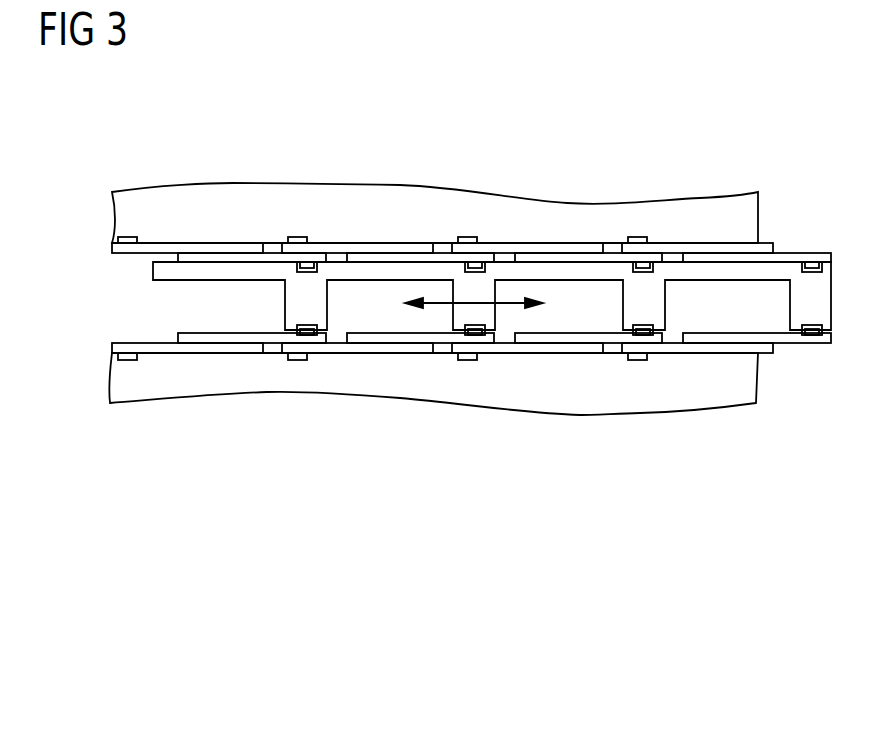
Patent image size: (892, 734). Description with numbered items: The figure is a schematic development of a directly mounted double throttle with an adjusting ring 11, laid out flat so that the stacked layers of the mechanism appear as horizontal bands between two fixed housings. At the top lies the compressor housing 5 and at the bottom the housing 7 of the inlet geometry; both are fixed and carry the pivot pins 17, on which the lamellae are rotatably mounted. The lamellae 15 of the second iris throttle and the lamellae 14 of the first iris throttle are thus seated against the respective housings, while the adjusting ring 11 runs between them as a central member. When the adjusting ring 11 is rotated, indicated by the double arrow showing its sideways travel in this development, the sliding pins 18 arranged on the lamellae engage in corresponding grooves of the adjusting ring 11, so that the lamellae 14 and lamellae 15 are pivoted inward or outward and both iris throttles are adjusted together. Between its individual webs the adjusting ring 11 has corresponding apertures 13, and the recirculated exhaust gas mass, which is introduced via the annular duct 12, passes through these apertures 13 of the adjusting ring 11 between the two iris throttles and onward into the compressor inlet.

The compressor housing 5 is at (234, 207).
The housing of the inlet geometry 7 is at (403, 378).
The adjusting ring 11 is at (480, 292).
The annular duct 12 is at (702, 313).
The apertures 13 is at (737, 305).
The lamellae of the first iris throttle 14 is at (555, 348).
The lamellae of the second iris throttle 15 is at (403, 260).
The pivot pins 17 is at (637, 242).
The sliding pins 18 is at (308, 263).